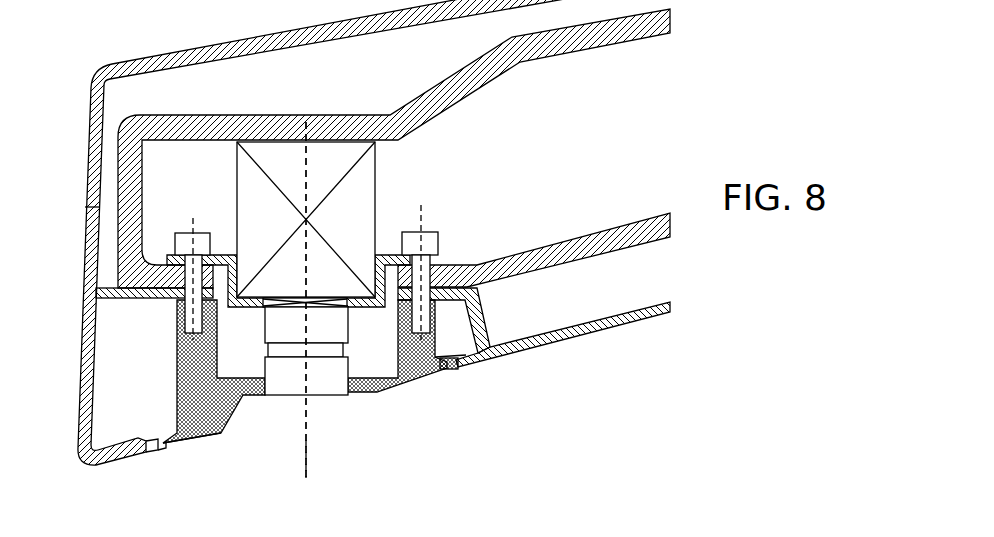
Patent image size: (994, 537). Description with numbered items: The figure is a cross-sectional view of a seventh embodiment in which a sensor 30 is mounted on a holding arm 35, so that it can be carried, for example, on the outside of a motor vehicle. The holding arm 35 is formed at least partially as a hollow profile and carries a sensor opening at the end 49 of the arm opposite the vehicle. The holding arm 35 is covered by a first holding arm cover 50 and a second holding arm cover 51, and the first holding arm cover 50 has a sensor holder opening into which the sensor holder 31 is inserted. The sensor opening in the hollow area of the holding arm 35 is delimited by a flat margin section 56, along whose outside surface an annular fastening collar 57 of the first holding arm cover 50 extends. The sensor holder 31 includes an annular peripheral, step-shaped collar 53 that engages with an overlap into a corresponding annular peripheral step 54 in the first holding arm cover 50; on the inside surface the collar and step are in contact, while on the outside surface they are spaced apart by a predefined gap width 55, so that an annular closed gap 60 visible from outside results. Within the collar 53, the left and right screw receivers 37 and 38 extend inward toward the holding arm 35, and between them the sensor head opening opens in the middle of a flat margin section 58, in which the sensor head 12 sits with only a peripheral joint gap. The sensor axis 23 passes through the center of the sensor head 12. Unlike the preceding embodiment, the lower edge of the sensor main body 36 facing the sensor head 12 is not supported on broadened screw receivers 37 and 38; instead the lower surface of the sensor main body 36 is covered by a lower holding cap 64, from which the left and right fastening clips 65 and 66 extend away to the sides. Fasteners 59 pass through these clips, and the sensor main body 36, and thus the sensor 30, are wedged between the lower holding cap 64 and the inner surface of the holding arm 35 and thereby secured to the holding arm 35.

The end of the arm 49 is at (86, 70).
The second holding arm cover 51 is at (93, 180).
The first holding arm cover 50 is at (90, 248).
The holding arm 35 is at (485, 74).
The flat margin section 56 is at (162, 264).
The annular fastening collar 57 is at (125, 299).
The annular closed gap 60 is at (452, 375).
The lower holding cap 64 is at (240, 308).
The left fastening clip 65 is at (225, 255).
The right fastening clip 66 is at (393, 255).
The left screw receiver 37 is at (177, 358).
The right screw receiver 38 is at (398, 337).
The flat margin section 58 is at (240, 378).
The step-shaped collar 53 is at (151, 430).
The annular peripheral step 54 is at (150, 453).
The gap width 55 is at (163, 455).
The sensor main body 36 is at (357, 221).
The sensor 30 is at (413, 183).
The sensor head 12 is at (337, 330).
The fastener 59 is at (188, 232).
The sensor axis 23 is at (306, 452).
The sensor holder 31 is at (288, 459).